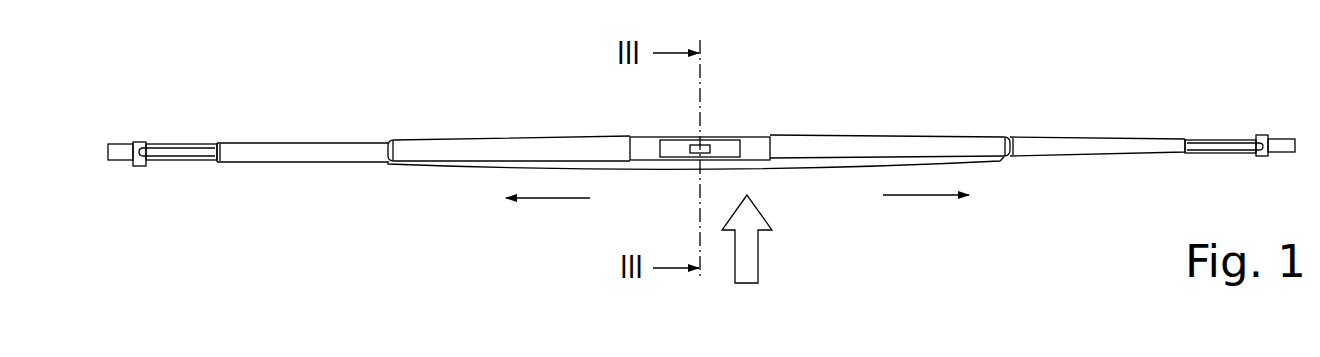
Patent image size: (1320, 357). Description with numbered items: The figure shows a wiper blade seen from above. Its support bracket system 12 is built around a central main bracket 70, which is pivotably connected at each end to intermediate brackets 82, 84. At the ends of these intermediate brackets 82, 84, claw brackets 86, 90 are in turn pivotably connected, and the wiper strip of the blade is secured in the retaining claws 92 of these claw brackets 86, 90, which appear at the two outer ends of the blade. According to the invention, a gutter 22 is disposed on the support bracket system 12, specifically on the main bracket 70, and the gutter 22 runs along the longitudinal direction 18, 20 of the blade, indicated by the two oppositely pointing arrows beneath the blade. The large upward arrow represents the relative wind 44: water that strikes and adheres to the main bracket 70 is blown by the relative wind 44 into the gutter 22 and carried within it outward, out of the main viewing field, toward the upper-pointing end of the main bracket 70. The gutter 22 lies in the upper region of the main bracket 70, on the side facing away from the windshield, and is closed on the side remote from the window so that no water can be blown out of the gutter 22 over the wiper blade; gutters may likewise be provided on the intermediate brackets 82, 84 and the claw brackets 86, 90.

The support bracket system 12 is at (749, 161).
The longitudinal direction 18 is at (558, 198).
The longitudinal direction 20 is at (922, 195).
The gutter 22 is at (985, 161).
The relative wind 44 is at (750, 274).
The main bracket 70 is at (460, 150).
The intermediate bracket 82 is at (296, 150).
The intermediate bracket 84 is at (1035, 145).
The claw bracket 86 is at (153, 145).
The claw bracket 90 is at (1197, 145).
The retaining claw 92 is at (136, 157).